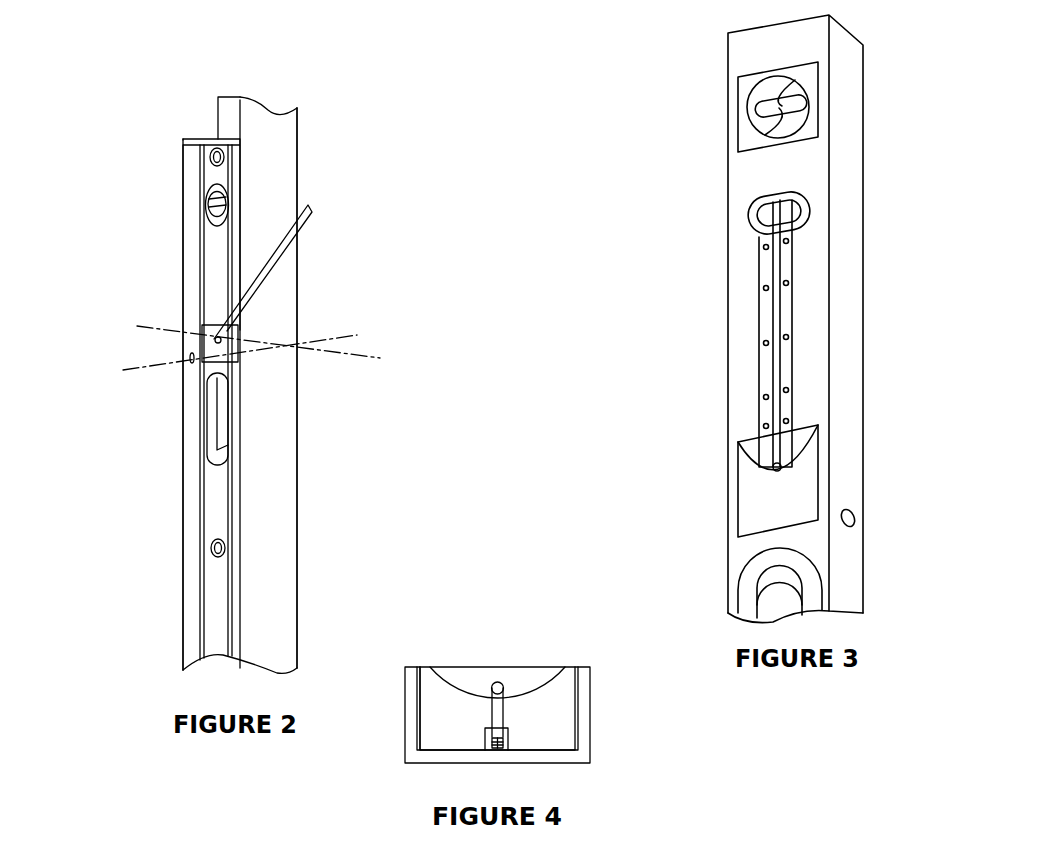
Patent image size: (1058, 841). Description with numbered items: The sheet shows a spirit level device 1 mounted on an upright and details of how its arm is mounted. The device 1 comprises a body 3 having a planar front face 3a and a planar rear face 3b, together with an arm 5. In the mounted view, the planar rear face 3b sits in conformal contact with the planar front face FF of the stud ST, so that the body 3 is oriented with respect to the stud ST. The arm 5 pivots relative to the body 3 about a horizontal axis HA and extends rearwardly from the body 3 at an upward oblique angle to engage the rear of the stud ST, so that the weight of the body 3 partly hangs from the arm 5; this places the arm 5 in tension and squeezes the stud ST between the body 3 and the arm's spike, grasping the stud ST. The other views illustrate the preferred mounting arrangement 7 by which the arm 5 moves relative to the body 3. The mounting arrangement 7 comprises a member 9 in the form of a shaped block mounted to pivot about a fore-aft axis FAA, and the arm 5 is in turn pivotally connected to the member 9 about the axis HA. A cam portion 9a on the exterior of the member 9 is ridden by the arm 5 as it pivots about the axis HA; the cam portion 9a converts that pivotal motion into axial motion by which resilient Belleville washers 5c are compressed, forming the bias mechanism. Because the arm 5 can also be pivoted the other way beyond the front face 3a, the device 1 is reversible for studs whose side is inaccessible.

In FIG. 2, the device 1 is at (178, 118).
In FIG. 2, the body 3 is at (200, 165).
In FIG. 3, the body 3 is at (728, 277).
In FIG. 2, the planar front face 3a is at (195, 283).
In FIG. 2, the planar rear face 3b is at (250, 160).
In FIG. 2, the arm 5 is at (280, 252).
In FIG. 3, the arm 5 is at (780, 323).
In FIG. 4, the Belleville washers 5c is at (497, 748).
In FIG. 3, the mounting arrangement 7 is at (792, 493).
In FIG. 4, the mounting arrangement 7 is at (518, 652).
In FIG. 2, the member 9 is at (215, 362).
In FIG. 4, the member 9 is at (497, 708).
In FIG. 4, the cam portion 9a is at (545, 679).
In FIG. 2, the front face of the stud FF is at (230, 110).
In FIG. 2, the stud ST is at (270, 178).
In FIG. 2, the horizontal axis HA is at (363, 357).
In FIG. 2, the fore-aft axis FAA is at (142, 365).